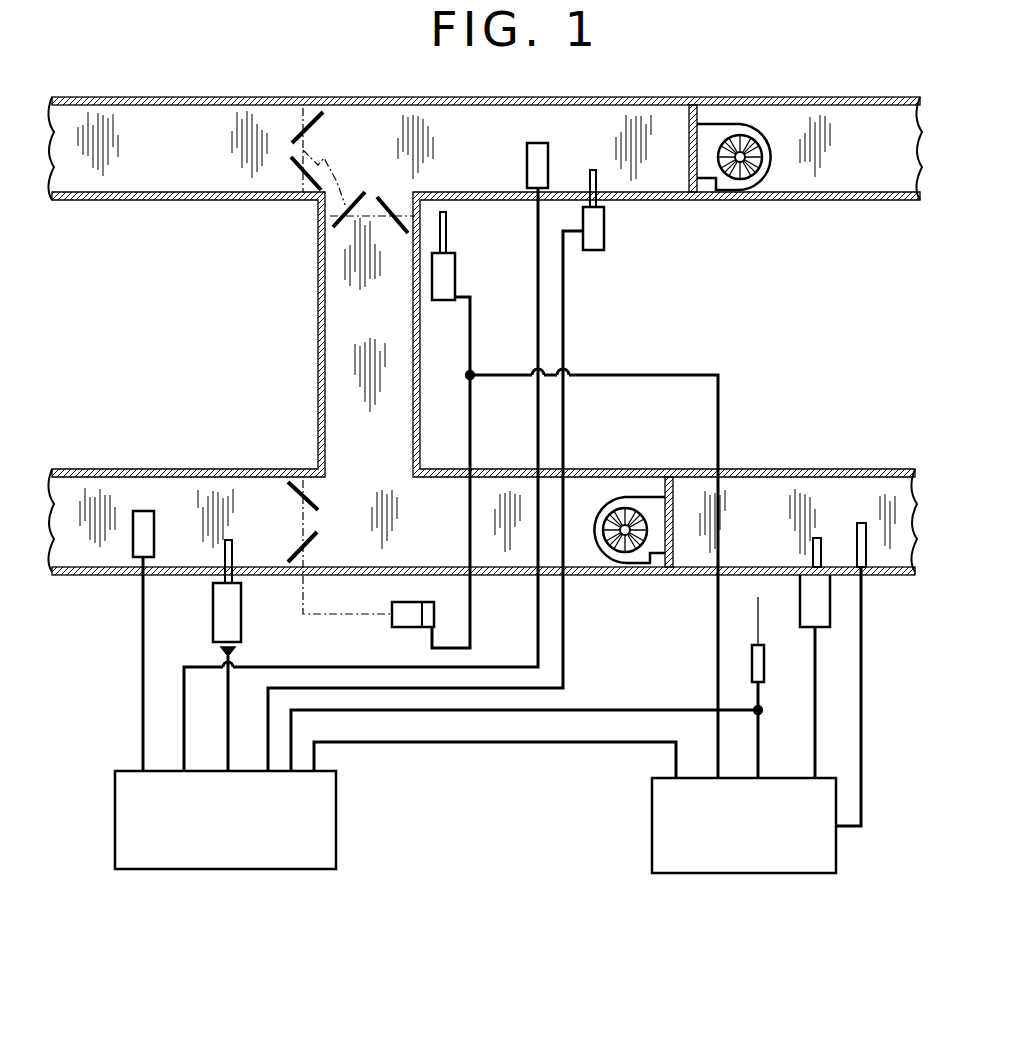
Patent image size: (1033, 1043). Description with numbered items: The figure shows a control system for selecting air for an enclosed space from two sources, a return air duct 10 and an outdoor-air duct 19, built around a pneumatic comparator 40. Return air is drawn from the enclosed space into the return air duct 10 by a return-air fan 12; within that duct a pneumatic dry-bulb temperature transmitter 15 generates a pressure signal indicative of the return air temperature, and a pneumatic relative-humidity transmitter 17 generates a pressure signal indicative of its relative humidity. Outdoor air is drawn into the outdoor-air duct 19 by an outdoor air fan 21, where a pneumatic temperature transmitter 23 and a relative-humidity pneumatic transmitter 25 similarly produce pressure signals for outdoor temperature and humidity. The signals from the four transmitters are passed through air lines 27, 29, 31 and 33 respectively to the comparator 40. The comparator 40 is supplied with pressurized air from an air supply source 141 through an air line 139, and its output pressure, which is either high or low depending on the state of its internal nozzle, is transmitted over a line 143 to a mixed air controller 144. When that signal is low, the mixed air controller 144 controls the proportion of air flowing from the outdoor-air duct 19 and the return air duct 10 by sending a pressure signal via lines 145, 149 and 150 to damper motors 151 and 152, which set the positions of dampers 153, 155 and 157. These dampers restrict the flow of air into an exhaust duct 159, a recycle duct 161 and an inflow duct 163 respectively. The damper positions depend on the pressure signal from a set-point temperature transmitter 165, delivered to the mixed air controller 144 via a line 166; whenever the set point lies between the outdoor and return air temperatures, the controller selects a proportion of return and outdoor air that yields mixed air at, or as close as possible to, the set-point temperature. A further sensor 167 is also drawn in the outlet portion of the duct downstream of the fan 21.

The return air duct 10 is at (822, 122).
The return-air fan 12 is at (714, 130).
The pneumatic dry-bulb temperature transmitter 15 is at (600, 226).
The pneumatic relative-humidity transmitter 17 is at (540, 143).
The outdoor-air duct 19 is at (78, 555).
The outdoor air fan 21 is at (655, 502).
The pneumatic temperature transmitter 23 is at (220, 612).
The relative-humidity pneumatic transmitter 25 is at (137, 510).
The air line 27 is at (565, 295).
The air line 29 is at (538, 238).
The air line 31 is at (228, 712).
The air line 33 is at (142, 670).
The comparator 40 is at (225, 860).
The air line 139 is at (462, 712).
The air supply source 141 is at (760, 665).
The line 143 is at (540, 742).
The mixed air controller 144 is at (740, 865).
The line 145 is at (598, 375).
The line 149 is at (472, 330).
The line 150 is at (468, 530).
The damper motor 151 is at (408, 622).
The damper motor 152 is at (448, 268).
The damper 153 is at (298, 118).
The damper 155 is at (322, 212).
The damper 157 is at (295, 482).
The exhaust duct 159 is at (185, 112).
The recycle duct 161 is at (355, 345).
The inflow duct 163 is at (540, 543).
The set-point temperature transmitter 165 is at (830, 620).
The line 166 is at (814, 758).
The discharge air temperature sensor 167 is at (868, 530).